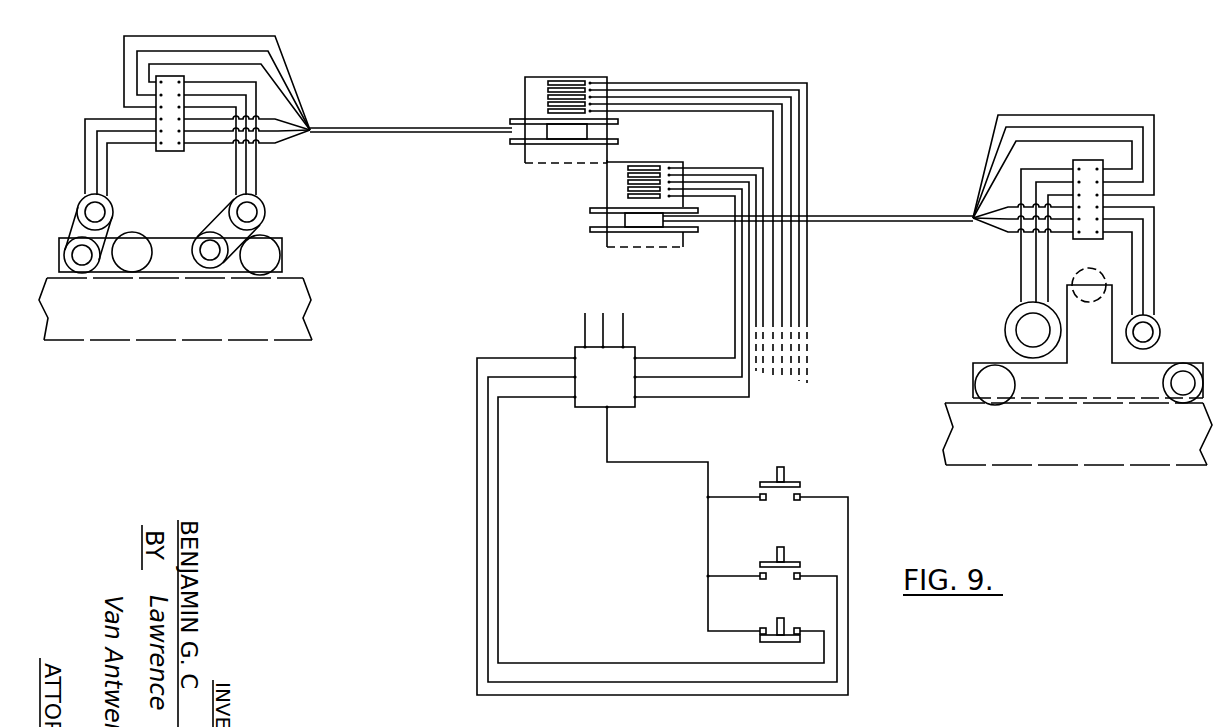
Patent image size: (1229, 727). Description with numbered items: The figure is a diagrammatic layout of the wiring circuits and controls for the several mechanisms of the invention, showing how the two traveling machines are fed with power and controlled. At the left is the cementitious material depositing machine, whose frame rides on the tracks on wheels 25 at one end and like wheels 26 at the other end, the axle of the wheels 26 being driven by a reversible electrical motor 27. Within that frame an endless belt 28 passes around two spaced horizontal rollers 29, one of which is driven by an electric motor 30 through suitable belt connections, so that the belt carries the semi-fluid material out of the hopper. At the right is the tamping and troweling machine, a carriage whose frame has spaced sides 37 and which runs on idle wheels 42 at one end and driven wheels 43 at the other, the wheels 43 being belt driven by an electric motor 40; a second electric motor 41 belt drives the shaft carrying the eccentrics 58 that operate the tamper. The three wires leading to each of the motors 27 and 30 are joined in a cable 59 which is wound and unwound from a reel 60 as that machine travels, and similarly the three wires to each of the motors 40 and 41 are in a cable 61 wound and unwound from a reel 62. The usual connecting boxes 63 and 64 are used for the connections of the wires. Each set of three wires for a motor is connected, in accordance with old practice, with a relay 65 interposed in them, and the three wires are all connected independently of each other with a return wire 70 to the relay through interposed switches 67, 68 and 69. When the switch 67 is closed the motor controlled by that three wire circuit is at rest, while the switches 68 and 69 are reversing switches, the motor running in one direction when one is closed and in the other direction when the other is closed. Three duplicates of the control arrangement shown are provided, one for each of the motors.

The wheels 25 is at (259, 276).
The wheels 26 is at (82, 275).
The reversible electrical motor 27 is at (112, 207).
The endless belt 28 is at (156, 238).
The horizontal rollers 29 is at (142, 262).
The electric motor 30 is at (266, 212).
The spaced sides 37 is at (1070, 405).
The electric motor 40 is at (1152, 320).
The electric motor 41 is at (1005, 330).
The idle wheels 42 is at (992, 405).
The driven wheels 43 is at (1175, 403).
The eccentrics 58 is at (1087, 302).
The cable 59 is at (418, 133).
The reel 60 is at (563, 137).
The cable 61 is at (848, 224).
The reel 62 is at (650, 220).
The connecting box 63 is at (172, 152).
The connecting box 64 is at (535, 92).
The relay 65 is at (617, 364).
The switch 67 is at (782, 637).
The reversing switch 68 is at (785, 562).
The reversing switch 69 is at (782, 487).
The return wire 70 is at (660, 463).